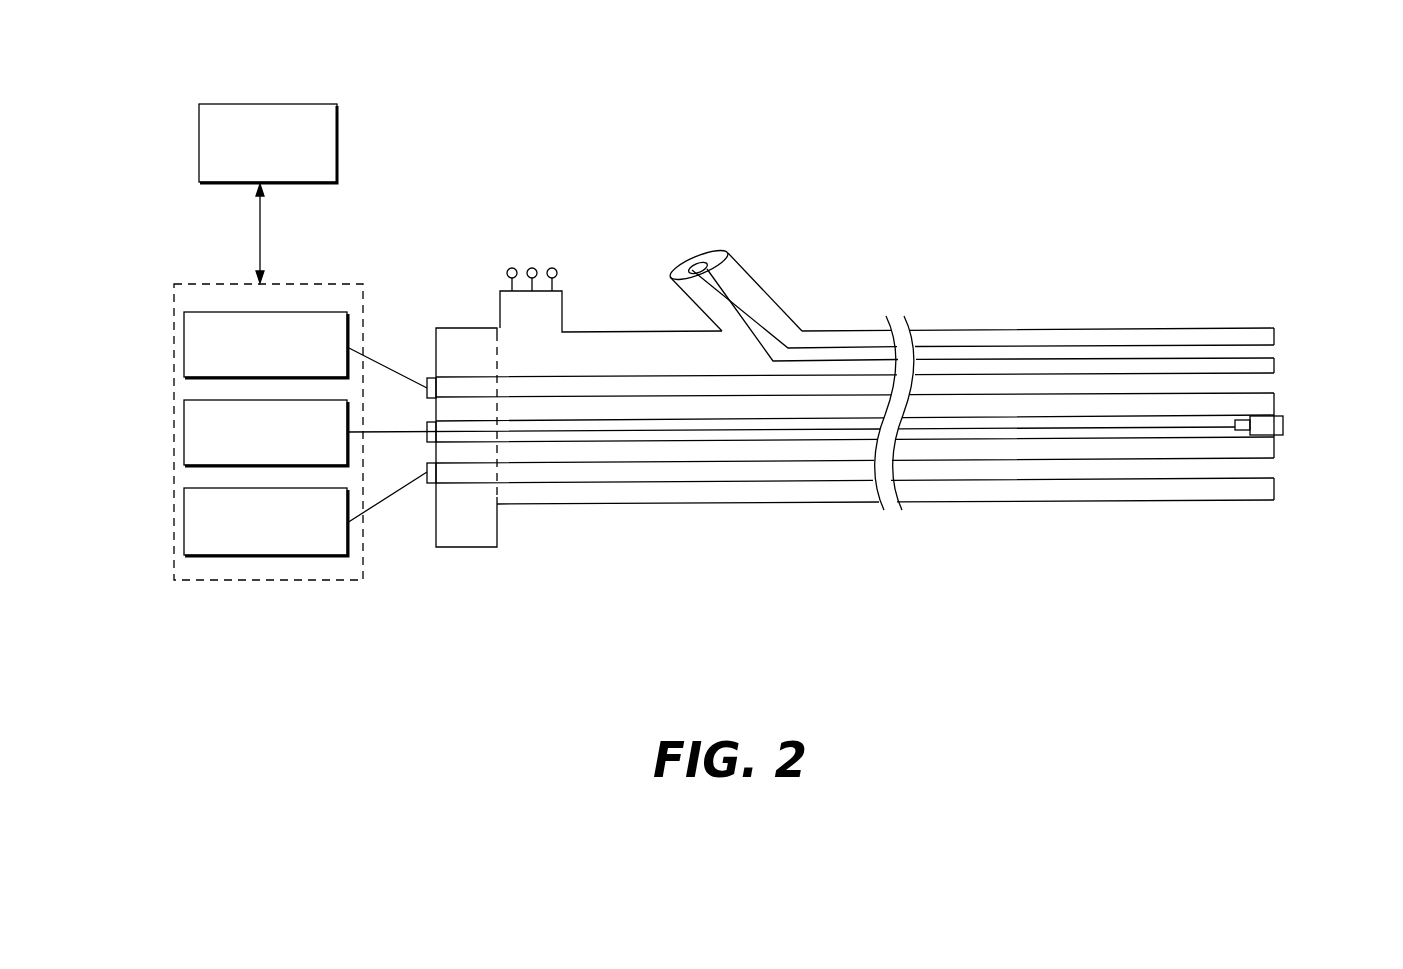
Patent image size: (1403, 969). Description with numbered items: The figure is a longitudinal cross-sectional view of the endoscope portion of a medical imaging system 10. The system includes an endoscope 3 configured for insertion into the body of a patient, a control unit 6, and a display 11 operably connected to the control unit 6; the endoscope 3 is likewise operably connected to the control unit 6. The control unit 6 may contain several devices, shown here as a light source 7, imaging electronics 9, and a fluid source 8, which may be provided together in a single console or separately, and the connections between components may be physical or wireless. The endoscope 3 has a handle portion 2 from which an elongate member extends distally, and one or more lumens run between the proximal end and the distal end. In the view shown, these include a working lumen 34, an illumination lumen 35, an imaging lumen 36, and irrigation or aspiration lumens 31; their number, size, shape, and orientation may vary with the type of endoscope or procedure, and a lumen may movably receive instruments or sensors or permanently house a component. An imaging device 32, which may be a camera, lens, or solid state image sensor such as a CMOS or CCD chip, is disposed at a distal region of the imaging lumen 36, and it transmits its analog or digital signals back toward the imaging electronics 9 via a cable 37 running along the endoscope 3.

The handle portion 2 is at (482, 248).
The endoscope 3 is at (700, 578).
The control unit 6 is at (203, 283).
The light source 7 is at (195, 335).
The fluid source 8 is at (190, 520).
The imaging electronics 9 is at (195, 421).
The medical imaging system 10 is at (905, 113).
The display 11 is at (313, 103).
The irrigation or aspiration lumens 31 is at (1268, 468).
The imaging device 32 is at (1235, 427).
The working lumen 34 is at (693, 266).
The illumination lumen 35 is at (1267, 385).
The imaging lumen 36 is at (1283, 427).
The cable 37 is at (955, 430).